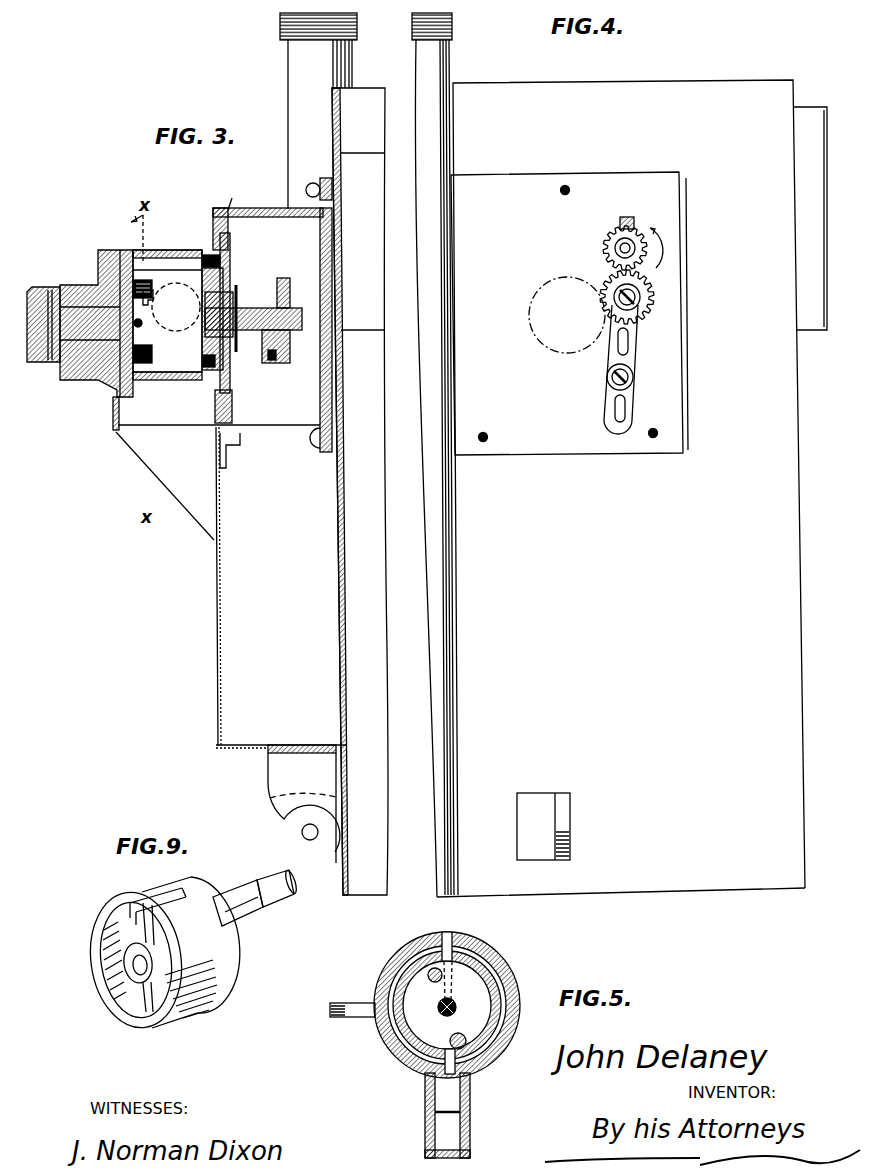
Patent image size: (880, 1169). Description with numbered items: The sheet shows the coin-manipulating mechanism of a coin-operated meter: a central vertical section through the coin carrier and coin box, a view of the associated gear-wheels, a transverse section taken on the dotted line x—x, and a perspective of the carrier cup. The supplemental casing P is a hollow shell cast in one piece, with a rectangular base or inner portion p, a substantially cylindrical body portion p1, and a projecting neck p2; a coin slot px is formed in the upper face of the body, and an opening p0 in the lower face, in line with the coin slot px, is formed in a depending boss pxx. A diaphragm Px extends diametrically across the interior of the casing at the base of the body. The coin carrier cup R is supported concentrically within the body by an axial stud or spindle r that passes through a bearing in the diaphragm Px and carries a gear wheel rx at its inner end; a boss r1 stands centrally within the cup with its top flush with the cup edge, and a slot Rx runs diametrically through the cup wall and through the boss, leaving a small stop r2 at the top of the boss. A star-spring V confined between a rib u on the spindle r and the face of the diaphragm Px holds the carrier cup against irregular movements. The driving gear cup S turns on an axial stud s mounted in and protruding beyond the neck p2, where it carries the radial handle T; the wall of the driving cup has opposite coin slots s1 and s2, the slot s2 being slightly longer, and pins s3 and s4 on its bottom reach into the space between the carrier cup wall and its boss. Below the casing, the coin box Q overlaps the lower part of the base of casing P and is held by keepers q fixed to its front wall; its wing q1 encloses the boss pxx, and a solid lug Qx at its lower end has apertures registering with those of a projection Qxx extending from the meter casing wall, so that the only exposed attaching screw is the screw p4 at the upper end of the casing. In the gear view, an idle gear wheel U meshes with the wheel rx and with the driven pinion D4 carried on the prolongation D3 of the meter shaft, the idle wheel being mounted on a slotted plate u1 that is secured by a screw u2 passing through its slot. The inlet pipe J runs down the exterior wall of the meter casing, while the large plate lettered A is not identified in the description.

In FIG. 3, the frame plate A is at (360, 491).
In FIG. 4, the frame plate A is at (632, 488).
In FIG. 3, the inlet pipe J is at (293, 63).
In FIG. 4, the inlet pipe J is at (446, 63).
In FIG. 3, the supplemental casing P is at (225, 318).
In FIG. 5, the supplemental casing P is at (392, 1060).
In FIG. 3, the diaphragm Px is at (230, 250).
In FIG. 3, the base or inner portion p is at (235, 195).
In FIG. 3, the body portion p1 is at (123, 262).
In FIG. 3, the projecting neck p2 is at (77, 296).
In FIG. 3, the attaching screw p4 is at (312, 186).
In FIG. 3, the coin slot px is at (160, 262).
In FIG. 5, the coin slot px is at (449, 937).
In FIG. 3, the depending boss pxx is at (112, 430).
In FIG. 3, the opening p0 is at (175, 428).
In FIG. 5, the opening p0 is at (471, 1098).
In FIG. 3, the keepers, braces, or stays q is at (228, 457).
In FIG. 3, the wing or extension q1 is at (188, 508).
In FIG. 5, the wing or extension q1 is at (424, 1131).
In FIG. 3, the coin receptacle Q is at (281, 587).
In FIG. 3, the solid lug Qx is at (304, 804).
In FIG. 3, the projection Qxx is at (346, 840).
In FIG. 4, the projection Qxx is at (572, 828).
In FIG. 3, the coin carrier cup R is at (210, 368).
In FIG. 9, the coin carrier cup R is at (222, 968).
In FIG. 5, the coin carrier cup R is at (416, 1021).
In FIG. 3, the slot Rx is at (177, 364).
In FIG. 9, the slot Rx is at (142, 902).
In FIG. 3, the axial stud or spindle r is at (201, 328).
In FIG. 9, the axial stud or spindle r is at (226, 906).
In FIG. 3, the boss r1 is at (147, 310).
In FIG. 9, the boss r1 is at (125, 965).
In FIG. 3, the stop r2 is at (142, 323).
In FIG. 9, the stop r2 is at (136, 972).
In FIG. 5, the stop r2 is at (456, 1004).
In FIG. 3, the gear wheel rx is at (288, 292).
In FIG. 4, the gear wheel rx is at (530, 330).
In FIG. 3, the driving gear cup S is at (125, 370).
In FIG. 5, the driving gear cup S is at (505, 1043).
In FIG. 3, the axial stud s is at (90, 330).
In FIG. 3, the coin slot s1 is at (172, 386).
In FIG. 3, the coin slot s2 is at (172, 266).
In FIG. 5, the pin s3 is at (429, 984).
In FIG. 5, the pin s4 is at (448, 1039).
In FIG. 3, the radial handle T is at (45, 366).
In FIG. 5, the radial handle T is at (350, 1018).
In FIG. 3, the star-spring V is at (232, 302).
In FIG. 3, the rib u is at (231, 313).
In FIG. 4, the idle gear wheel U is at (655, 296).
In FIG. 4, the slotted plate u1 is at (636, 356).
In FIG. 4, the screw u2 is at (608, 384).
In FIG. 4, the prolongation D3 is at (606, 258).
In FIG. 4, the driven pinion D4 is at (618, 224).